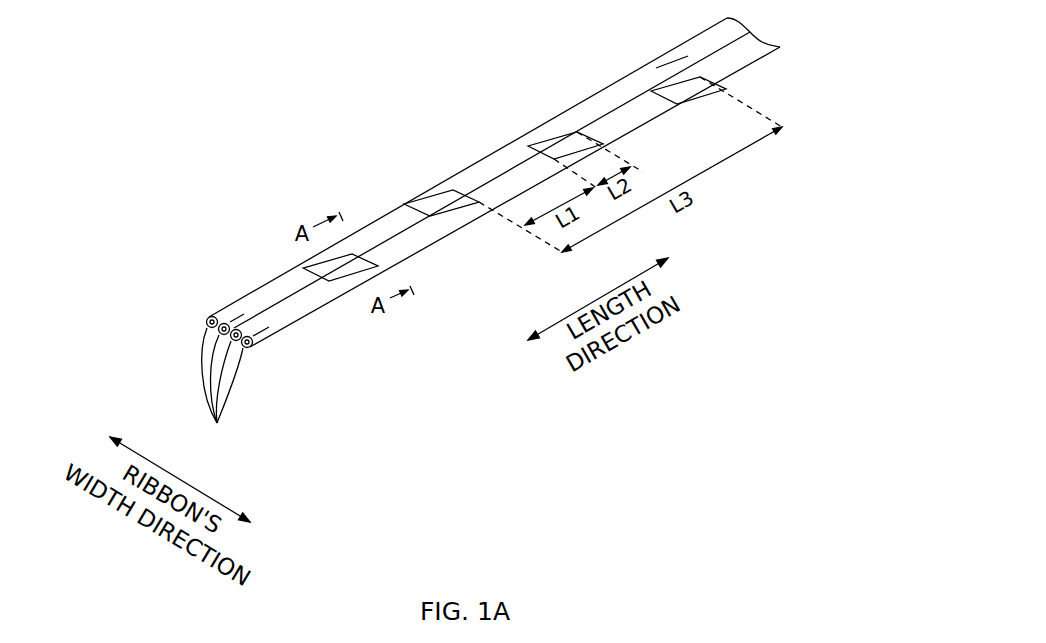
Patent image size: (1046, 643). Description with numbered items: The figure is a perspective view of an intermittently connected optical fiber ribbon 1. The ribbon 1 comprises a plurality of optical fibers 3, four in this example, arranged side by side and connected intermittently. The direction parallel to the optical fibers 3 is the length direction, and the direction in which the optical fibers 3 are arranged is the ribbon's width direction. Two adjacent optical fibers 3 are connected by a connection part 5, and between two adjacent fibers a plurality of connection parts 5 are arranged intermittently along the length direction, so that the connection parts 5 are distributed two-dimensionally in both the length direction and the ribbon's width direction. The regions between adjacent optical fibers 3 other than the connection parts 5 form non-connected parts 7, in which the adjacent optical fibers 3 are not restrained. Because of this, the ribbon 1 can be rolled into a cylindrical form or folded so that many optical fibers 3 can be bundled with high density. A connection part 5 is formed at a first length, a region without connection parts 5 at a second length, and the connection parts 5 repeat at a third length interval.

The intermittently connected optical fiber ribbon 1 is at (389, 97).
The optical fiber 3 is at (227, 385).
The connection part 5 is at (249, 308).
The non-connected part 7 is at (343, 279).